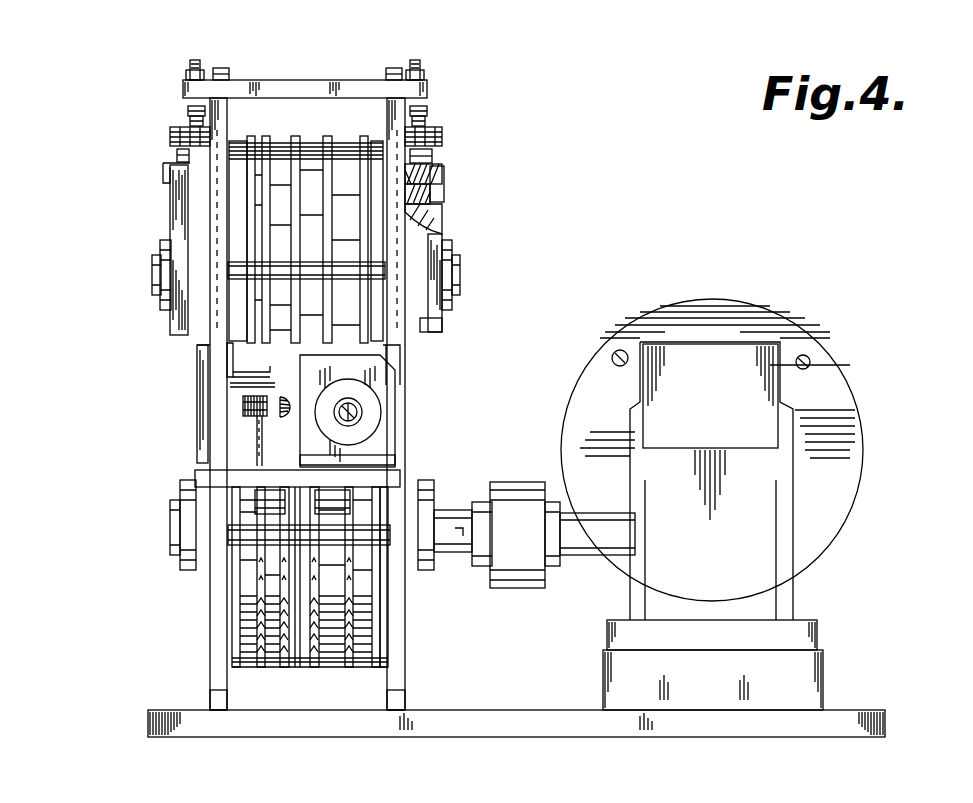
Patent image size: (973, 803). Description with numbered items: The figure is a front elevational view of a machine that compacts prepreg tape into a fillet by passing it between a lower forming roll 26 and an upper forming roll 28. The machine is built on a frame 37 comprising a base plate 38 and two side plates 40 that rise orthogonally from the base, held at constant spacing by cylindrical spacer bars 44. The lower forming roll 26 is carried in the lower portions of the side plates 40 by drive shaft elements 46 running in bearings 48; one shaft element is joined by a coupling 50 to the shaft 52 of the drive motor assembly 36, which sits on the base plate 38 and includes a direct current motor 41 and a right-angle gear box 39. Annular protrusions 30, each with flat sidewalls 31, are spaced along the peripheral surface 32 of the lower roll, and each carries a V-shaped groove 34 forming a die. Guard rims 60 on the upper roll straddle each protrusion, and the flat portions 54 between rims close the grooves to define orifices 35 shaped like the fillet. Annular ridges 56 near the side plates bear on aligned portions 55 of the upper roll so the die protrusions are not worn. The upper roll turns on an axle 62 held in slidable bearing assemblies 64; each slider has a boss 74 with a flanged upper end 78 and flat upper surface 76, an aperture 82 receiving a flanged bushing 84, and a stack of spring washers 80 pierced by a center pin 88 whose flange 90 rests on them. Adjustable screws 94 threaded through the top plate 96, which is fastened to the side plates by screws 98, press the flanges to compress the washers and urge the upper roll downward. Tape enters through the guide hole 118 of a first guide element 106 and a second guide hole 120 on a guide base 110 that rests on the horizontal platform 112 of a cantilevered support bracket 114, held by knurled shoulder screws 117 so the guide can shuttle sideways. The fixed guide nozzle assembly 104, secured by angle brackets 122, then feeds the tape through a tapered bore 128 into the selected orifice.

The lower forming roll 26 is at (368, 672).
The upper forming roll 28 is at (306, 181).
The annular protrusions 30 is at (294, 630).
The sidewalls 31 is at (304, 667).
The peripheral surface 32 is at (258, 670).
The groove 34 is at (269, 670).
The orifices 35 is at (360, 410).
The drive motor assembly 36 is at (755, 504).
The frame 37 is at (207, 680).
The base plate 38 is at (575, 740).
The right-angle gear box 39 is at (775, 606).
The side plates 40 is at (210, 697).
The direct current motor 41 is at (850, 449).
The spacer bars 44 is at (375, 273).
The drive shaft elements 46 is at (170, 548).
The bearings 48 is at (178, 508).
The coupling 50 is at (515, 595).
The shaft 52 is at (610, 570).
The flat portions 54 is at (268, 138).
The aligned portion 55 is at (238, 140).
The annular ridges 56 is at (236, 680).
The guard rims 60 is at (364, 138).
The axle 62 is at (152, 258).
The bearing assembly 64 is at (168, 236).
The boss 74 is at (172, 198).
The upper surface 76 is at (176, 158).
The flanged upper end 78 is at (168, 172).
The spring washers 80 is at (168, 136).
The aperture 82 is at (440, 196).
The flanged bushing 84 is at (440, 210).
The center pin 88 is at (442, 176).
The flange 90 is at (172, 130).
The adjustable screws 94 is at (195, 62).
The top plate 96 is at (241, 82).
The screws 98 is at (222, 68).
The fixed guide nozzle assembly 104 is at (258, 420).
The first guide element 106 is at (403, 410).
The guide base 110 is at (368, 458).
The horizontal platform 112 is at (203, 456).
The cantilevered support bracket 114 is at (195, 482).
The knurled shoulder screws 117 is at (275, 510).
The guide hole 118 is at (230, 386).
The guide hole 120 is at (230, 376).
The angle brackets 122 is at (198, 348).
The bore 128 is at (243, 404).